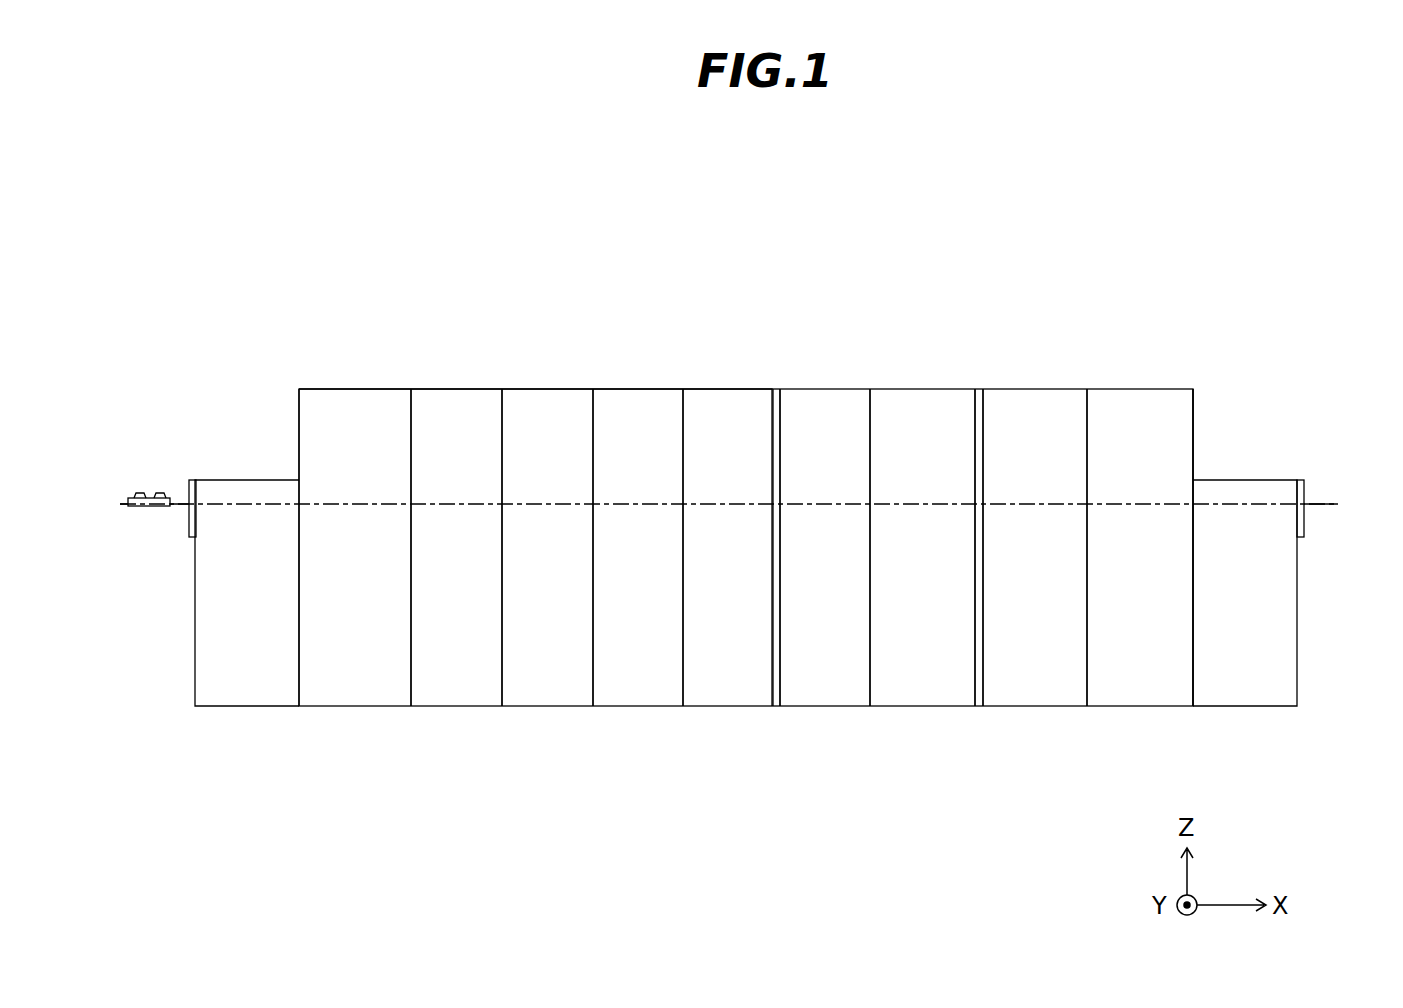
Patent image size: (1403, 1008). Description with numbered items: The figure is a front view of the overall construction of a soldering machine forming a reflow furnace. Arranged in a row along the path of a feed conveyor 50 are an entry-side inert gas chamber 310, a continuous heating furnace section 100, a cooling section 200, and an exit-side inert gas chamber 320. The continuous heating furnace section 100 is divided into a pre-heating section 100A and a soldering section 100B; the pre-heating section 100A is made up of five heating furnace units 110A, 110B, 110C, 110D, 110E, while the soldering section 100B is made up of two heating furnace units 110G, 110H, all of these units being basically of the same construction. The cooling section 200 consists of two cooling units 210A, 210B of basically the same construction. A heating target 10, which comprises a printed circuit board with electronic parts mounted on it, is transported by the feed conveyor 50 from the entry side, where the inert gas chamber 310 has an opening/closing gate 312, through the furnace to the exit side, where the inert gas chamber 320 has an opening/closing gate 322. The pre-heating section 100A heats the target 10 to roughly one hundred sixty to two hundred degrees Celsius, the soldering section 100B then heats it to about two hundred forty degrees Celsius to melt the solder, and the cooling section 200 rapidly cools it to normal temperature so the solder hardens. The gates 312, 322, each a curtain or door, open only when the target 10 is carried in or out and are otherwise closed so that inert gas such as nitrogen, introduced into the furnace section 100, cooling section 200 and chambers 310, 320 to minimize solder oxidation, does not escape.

The heating target 10 is at (148, 493).
The feed conveyor 50 is at (180, 512).
The continuous heating furnace section 100 is at (973, 288).
The pre-heating section 100A is at (772, 370).
The soldering section 100B is at (973, 370).
The heating furnace unit 110A is at (358, 693).
The heating furnace unit 110B is at (458, 693).
The heating furnace unit 110C is at (550, 693).
The heating furnace unit 110D is at (641, 693).
The heating furnace unit 110E is at (731, 693).
The heating furnace unit 110G is at (829, 693).
The heating furnace unit 110H is at (926, 693).
The cooling section 200 is at (1192, 370).
The cooling unit 210A is at (1033, 693).
The cooling unit 210B is at (1140, 693).
The inert gas chamber 310 is at (254, 693).
The opening/closing gate 312 is at (192, 482).
The inert gas chamber 320 is at (1245, 693).
The opening/closing gate 322 is at (1304, 518).